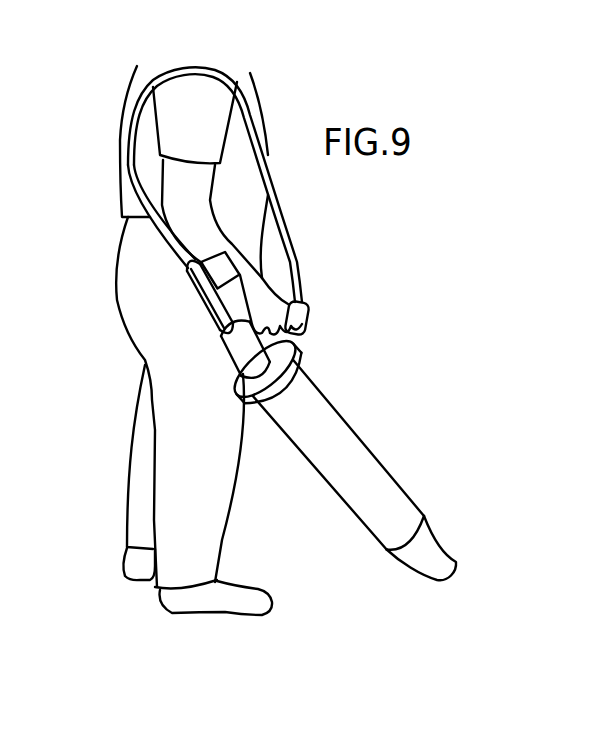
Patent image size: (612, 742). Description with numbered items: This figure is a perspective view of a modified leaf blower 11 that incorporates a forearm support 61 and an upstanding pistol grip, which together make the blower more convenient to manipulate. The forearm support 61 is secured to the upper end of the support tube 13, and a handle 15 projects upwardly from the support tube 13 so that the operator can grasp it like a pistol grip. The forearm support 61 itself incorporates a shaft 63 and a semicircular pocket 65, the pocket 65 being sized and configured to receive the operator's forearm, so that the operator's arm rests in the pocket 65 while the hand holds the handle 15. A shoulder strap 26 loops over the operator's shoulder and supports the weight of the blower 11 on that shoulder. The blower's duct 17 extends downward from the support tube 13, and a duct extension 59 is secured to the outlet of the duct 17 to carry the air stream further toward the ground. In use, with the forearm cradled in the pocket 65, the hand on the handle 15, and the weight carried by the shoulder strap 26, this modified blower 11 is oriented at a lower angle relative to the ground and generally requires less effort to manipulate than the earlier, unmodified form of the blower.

The modified leaf blower 11 is at (427, 333).
The support tube 13 is at (233, 358).
The handle 15 is at (309, 314).
The duct 17 is at (303, 449).
The shoulder strap 26 is at (284, 217).
The duct extension 59 is at (420, 567).
The forearm support 61 is at (88, 293).
The shaft 63 is at (221, 312).
The semicircular pocket 65 is at (200, 259).